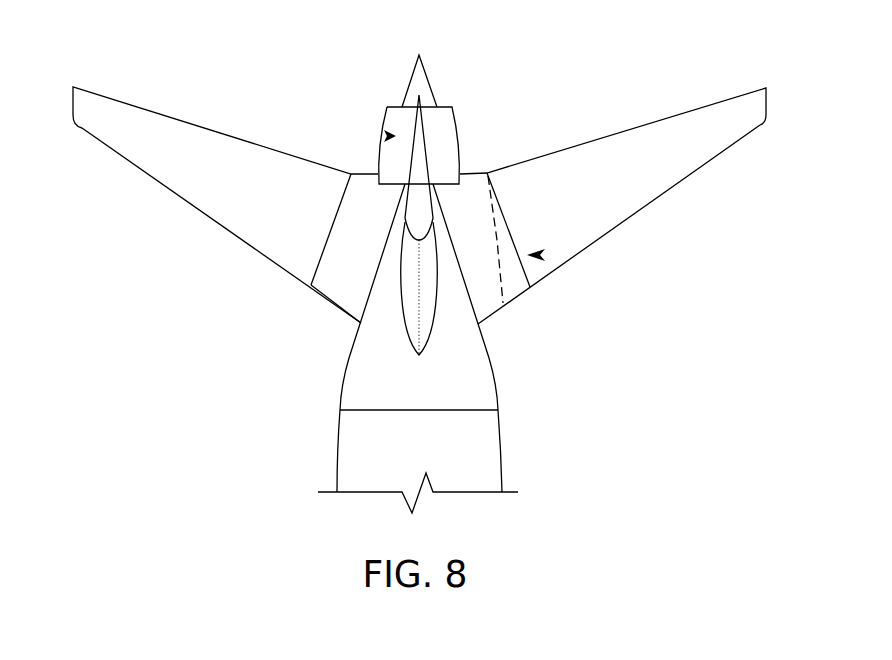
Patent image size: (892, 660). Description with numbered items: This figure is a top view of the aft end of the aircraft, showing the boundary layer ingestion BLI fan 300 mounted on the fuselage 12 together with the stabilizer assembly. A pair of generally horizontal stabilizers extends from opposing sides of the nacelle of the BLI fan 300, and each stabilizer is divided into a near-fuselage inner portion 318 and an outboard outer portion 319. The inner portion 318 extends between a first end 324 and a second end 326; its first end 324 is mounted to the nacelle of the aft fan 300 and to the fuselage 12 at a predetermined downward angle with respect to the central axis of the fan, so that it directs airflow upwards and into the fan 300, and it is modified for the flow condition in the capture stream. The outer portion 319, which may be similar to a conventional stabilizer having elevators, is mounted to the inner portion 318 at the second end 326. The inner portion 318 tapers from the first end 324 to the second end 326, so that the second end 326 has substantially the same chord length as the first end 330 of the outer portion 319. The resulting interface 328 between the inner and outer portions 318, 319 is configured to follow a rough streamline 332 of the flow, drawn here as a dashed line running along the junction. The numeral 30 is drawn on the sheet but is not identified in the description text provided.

The fuselage 12 is at (498, 397).
The canopy 30 is at (400, 313).
The BLI fan 300 is at (378, 131).
The inner portion 318 is at (333, 305).
The outer portion 319 is at (220, 228).
The first end 324 is at (373, 280).
The second end 326 is at (356, 194).
The interface 328 is at (560, 267).
The first end 330 is at (521, 242).
The streamline 332 is at (493, 220).